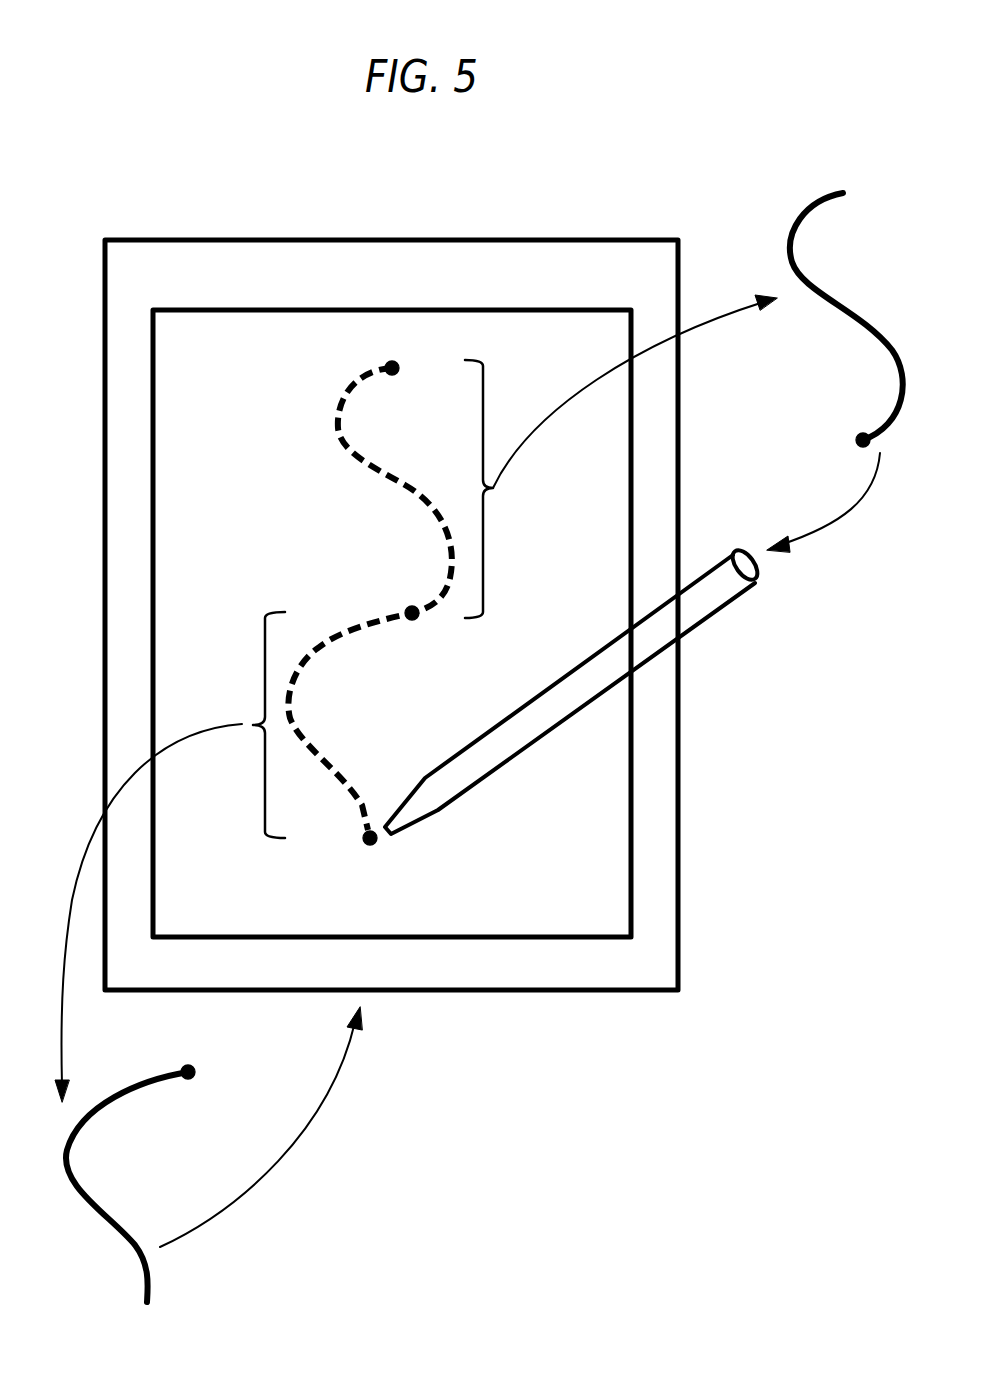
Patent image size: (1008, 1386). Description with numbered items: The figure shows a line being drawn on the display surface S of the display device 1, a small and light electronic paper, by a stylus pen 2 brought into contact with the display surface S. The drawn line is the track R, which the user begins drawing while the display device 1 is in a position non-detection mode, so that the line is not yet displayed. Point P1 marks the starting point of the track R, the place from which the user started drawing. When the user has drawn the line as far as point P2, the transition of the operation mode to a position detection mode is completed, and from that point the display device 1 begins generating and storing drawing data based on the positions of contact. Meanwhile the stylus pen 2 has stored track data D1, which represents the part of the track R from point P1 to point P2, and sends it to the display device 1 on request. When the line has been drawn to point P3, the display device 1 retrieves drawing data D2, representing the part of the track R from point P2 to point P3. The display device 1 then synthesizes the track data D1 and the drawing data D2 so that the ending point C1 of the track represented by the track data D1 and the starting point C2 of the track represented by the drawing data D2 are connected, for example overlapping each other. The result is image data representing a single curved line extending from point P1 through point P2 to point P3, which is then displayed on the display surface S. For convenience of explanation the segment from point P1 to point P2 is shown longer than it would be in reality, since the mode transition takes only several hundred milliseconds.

The display device 1 is at (530, 240).
The stylus pen 2 is at (703, 606).
The display surface S is at (632, 410).
The track R is at (333, 389).
The point P1 is at (401, 353).
The point P2 is at (395, 599).
The point P3 is at (347, 838).
The track data D1 is at (788, 243).
The drawing data D2 is at (152, 1082).
The ending point C1 is at (823, 488).
The starting point C2 is at (214, 1077).